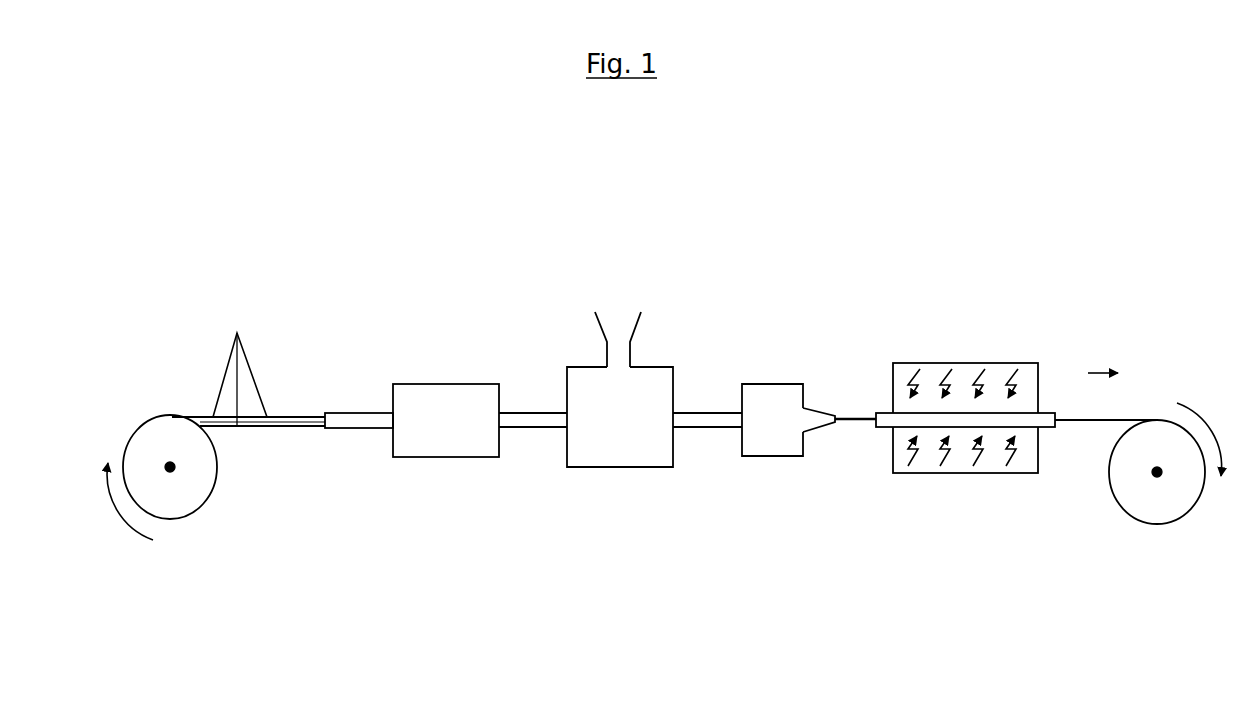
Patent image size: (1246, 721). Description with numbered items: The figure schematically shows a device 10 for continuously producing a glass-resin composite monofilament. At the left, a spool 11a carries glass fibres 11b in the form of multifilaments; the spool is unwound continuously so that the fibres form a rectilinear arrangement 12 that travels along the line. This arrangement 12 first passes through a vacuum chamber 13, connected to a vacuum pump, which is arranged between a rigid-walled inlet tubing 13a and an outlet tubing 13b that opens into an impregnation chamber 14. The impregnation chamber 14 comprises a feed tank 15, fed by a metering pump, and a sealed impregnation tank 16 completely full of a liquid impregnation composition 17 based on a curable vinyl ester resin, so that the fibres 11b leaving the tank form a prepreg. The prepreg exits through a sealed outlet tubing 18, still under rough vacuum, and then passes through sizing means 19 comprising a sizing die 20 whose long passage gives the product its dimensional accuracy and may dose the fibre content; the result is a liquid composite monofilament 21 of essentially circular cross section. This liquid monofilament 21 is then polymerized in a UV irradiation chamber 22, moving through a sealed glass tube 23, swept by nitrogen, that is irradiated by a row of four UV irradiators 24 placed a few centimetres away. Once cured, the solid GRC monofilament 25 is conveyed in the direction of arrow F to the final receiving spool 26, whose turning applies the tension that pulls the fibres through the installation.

The device 10 is at (690, 200).
The spool 11a is at (178, 490).
The glass fibres 11b is at (239, 362).
The rectilinear arrangement 12 is at (282, 404).
The vacuum chamber 13 is at (437, 372).
The inlet tubing 13a is at (355, 412).
The outlet tubing 13b is at (533, 412).
The impregnation chamber 14 is at (574, 356).
The feed tank 15 is at (618, 318).
The sealed impregnation tank 16 is at (588, 468).
The impregnation composition 17 is at (630, 435).
The sealed outlet tubing 18 is at (702, 412).
The sizing means 19 is at (772, 372).
The sizing die 20 is at (817, 410).
The liquid composite monofilament 21 is at (857, 416).
The UV irradiation chamber 22 is at (1001, 355).
The sealed glass tube 23 is at (882, 432).
The UV irradiators 24 is at (945, 377).
The GRC monofilament 25 is at (1090, 421).
The final receiving spool 26 is at (1172, 497).